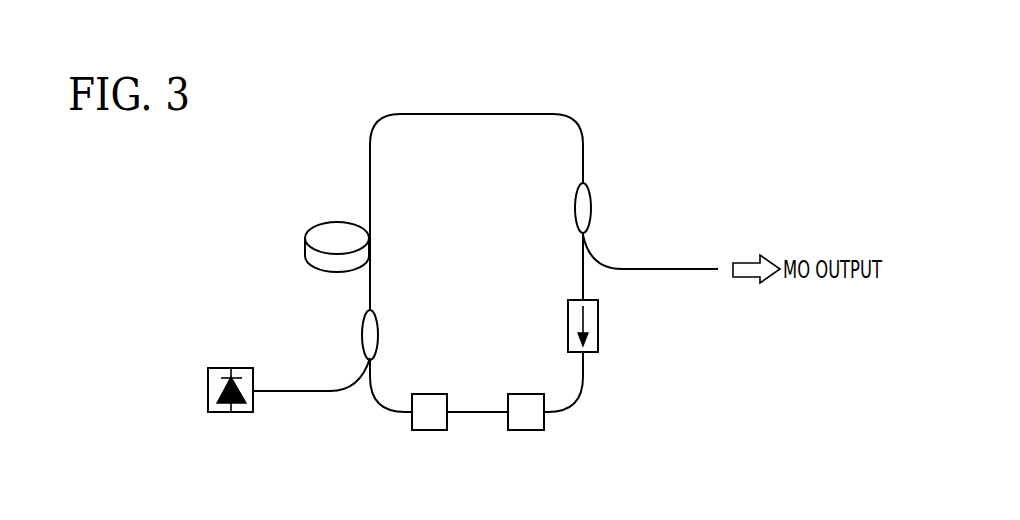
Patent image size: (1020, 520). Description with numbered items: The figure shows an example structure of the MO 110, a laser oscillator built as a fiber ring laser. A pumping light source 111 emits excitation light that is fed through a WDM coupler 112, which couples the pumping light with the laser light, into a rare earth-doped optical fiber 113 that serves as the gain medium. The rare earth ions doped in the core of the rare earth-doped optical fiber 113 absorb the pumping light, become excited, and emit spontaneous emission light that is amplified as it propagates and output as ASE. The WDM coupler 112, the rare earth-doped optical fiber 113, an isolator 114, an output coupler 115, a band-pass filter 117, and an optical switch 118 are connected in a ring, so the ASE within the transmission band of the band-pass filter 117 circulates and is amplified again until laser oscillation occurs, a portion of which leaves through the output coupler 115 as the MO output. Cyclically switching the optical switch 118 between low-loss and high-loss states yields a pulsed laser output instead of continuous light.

The MO 110 is at (622, 132).
The pumping light source 111 is at (241, 368).
The WDM coupler 112 is at (362, 340).
The rare earth-doped optical fiber 113 is at (305, 255).
The isolator 114 is at (598, 323).
The output coupler 115 is at (592, 208).
The band-pass filter 117 is at (522, 430).
The optical switch 118 is at (427, 430).